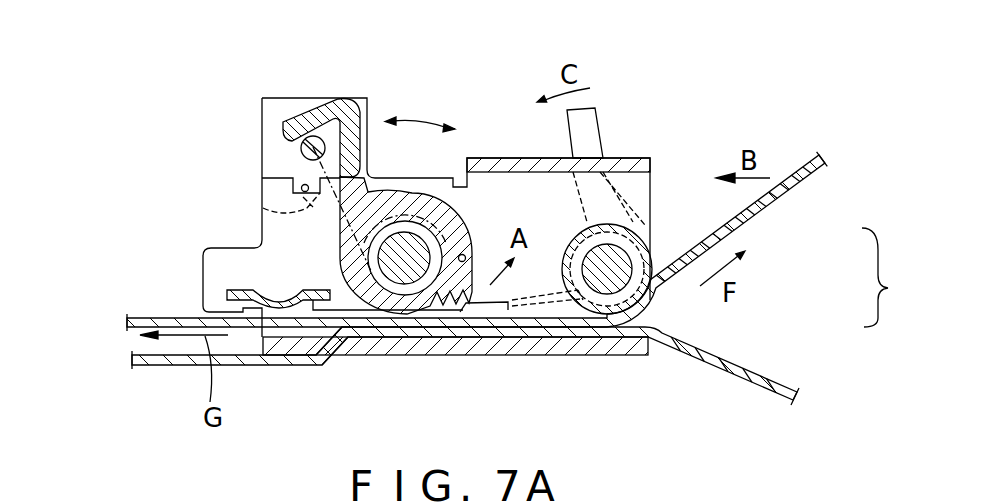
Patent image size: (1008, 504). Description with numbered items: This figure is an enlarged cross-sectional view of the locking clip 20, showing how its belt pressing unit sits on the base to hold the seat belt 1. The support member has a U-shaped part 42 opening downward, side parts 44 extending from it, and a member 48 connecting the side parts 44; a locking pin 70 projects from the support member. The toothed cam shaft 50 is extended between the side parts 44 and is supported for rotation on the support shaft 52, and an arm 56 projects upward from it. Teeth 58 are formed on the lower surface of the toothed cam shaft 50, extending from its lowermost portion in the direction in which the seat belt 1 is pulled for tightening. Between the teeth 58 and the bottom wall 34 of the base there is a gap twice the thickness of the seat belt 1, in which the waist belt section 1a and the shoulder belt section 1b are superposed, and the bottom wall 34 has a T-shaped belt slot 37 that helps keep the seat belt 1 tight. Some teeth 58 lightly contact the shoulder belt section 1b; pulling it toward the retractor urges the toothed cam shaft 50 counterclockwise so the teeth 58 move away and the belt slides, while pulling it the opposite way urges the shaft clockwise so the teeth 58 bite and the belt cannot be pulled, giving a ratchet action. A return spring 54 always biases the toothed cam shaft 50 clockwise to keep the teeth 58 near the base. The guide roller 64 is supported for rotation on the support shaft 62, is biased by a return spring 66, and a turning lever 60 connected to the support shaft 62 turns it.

The locking clip 20 is at (460, 24).
The side parts 44 is at (277, 167).
The arm 56 is at (299, 118).
The locking pin 70 is at (302, 147).
The return spring 54 is at (280, 207).
The member 48 is at (245, 287).
The toothed cam shaft 50 is at (386, 197).
The support shaft 52 is at (404, 282).
The U-shaped part 42 is at (497, 157).
The turning lever 60 is at (588, 122).
The return spring 66 is at (585, 206).
The guide roller 64 is at (652, 256).
The support shaft 62 is at (608, 290).
The teeth 58 is at (497, 310).
The bottom wall 34 is at (548, 348).
The belt slot 37 is at (338, 362).
The waist belt section 1a is at (162, 366).
The shoulder belt section 1b is at (147, 317).
The seat belt 1 is at (888, 277).